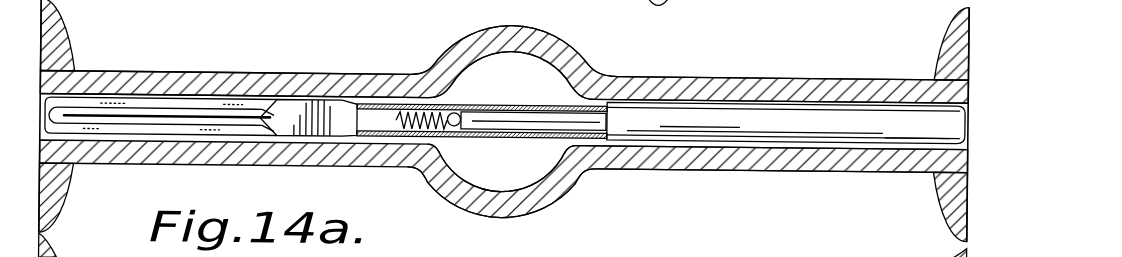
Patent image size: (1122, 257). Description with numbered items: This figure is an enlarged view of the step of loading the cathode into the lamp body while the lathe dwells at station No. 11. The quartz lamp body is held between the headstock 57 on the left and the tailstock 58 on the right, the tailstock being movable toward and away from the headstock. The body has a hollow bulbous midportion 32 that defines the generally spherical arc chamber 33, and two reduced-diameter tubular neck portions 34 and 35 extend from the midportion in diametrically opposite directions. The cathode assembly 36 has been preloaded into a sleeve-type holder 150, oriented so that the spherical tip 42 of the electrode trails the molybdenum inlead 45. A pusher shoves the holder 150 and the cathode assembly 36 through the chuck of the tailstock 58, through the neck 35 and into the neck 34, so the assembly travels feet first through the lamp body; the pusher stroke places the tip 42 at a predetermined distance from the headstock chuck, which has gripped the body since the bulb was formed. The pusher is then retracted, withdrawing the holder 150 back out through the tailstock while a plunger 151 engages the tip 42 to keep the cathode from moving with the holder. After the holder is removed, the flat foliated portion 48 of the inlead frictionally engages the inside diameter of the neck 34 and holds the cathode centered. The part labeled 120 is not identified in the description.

The station 11 is at (605, 204).
The headstock 57 is at (68, 28).
The tailstock 58 is at (941, 24).
The neck portion 34 is at (245, 70).
The neck portion 35 is at (740, 72).
The lower housing wall 120 is at (770, 163).
The bulbous midportion 32 is at (460, 36).
The arc chamber 33 is at (491, 167).
The inlead wire 45 is at (177, 108).
The foliated portion 48 is at (300, 100).
The electrode-inlead assembly 36 is at (373, 122).
The tip 42 is at (454, 107).
The plunger 151 is at (533, 112).
The sleeve-type holder 150 is at (627, 109).